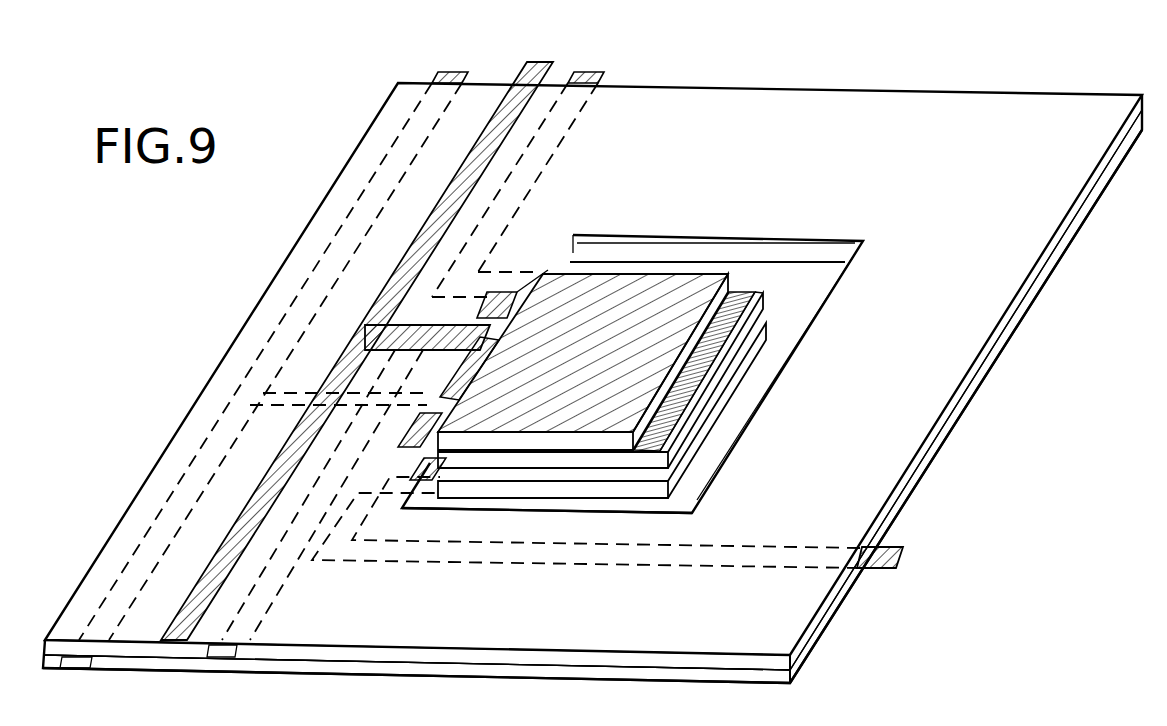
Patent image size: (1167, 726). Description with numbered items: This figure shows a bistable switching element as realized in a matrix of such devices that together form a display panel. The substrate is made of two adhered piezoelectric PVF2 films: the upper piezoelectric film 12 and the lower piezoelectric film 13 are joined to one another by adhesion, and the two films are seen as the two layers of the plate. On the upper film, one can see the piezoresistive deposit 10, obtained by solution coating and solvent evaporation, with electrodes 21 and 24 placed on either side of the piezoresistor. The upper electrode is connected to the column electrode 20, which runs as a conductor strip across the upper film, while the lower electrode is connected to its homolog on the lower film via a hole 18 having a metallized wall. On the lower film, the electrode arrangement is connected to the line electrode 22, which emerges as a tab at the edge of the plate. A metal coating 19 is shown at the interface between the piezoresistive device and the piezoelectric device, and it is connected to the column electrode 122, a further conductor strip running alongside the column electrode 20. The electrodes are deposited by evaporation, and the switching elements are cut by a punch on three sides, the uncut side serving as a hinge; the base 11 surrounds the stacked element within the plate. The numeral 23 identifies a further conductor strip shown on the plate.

The piezoresistive deposit 10 is at (738, 283).
The base 11 is at (620, 493).
The upper piezoelectric film 12 is at (773, 303).
The lower piezoelectric film 13 is at (760, 333).
The hole 18 is at (427, 383).
The metal coating 19 is at (500, 290).
The column electrode 20 is at (529, 60).
The electrode 21 is at (593, 287).
The line electrode 22 is at (898, 547).
The conductor strip 23 is at (443, 60).
The electrode 24 is at (768, 282).
The column electrode 122 is at (578, 70).